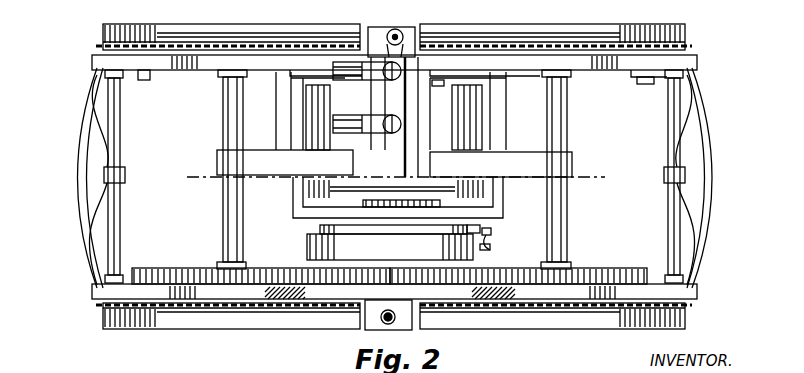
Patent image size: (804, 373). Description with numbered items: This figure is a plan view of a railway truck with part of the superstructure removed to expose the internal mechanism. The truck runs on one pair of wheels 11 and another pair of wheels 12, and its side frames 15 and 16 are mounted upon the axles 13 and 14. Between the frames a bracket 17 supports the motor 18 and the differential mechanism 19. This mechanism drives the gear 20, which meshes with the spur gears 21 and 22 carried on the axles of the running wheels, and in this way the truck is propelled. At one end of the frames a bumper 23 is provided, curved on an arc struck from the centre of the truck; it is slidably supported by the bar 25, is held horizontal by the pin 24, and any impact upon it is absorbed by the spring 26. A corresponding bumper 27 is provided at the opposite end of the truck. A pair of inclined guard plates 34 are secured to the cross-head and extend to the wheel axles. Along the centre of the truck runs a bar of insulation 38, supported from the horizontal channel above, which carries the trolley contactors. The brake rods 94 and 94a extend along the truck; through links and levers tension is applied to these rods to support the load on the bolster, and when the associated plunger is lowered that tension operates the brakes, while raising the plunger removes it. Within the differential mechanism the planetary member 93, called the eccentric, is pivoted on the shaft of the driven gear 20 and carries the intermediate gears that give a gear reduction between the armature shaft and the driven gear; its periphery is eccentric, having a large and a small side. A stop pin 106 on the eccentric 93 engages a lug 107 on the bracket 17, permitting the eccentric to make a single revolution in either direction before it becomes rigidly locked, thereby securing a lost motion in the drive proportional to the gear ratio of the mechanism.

The pair of wheels 11 is at (212, 28).
The pair of wheels 12 is at (601, 29).
The axle 13 is at (226, 116).
The axle 14 is at (563, 133).
The side frame 15 is at (167, 66).
The side frame 16 is at (677, 296).
The bracket 17 is at (300, 122).
The motor 18 is at (488, 124).
The differential mechanism 19 is at (318, 227).
The gear 20 is at (314, 258).
The spur gear 21 is at (183, 267).
The spur gear 22 is at (640, 268).
The bumper 23 is at (82, 178).
The pin 24 is at (143, 81).
The bar 25 is at (121, 222).
The spring 26 is at (91, 144).
The bumper 27 is at (710, 173).
The inclined guard plates 34 is at (218, 162).
The bar of insulation 38 is at (375, 117).
The planetary member 93 is at (484, 248).
The rod 94 is at (384, 319).
The brake rod 94a is at (398, 28).
The stop pin 106 is at (488, 240).
The lug 107 is at (491, 232).